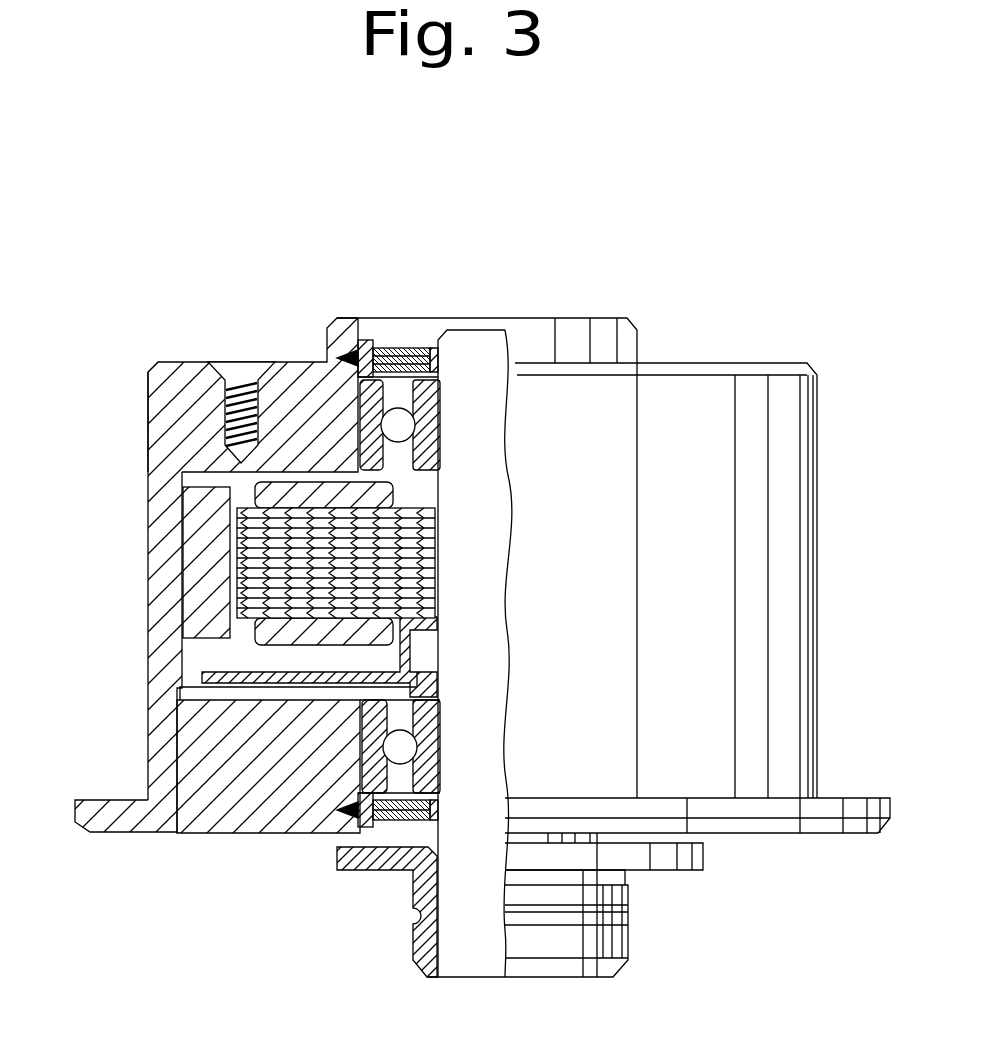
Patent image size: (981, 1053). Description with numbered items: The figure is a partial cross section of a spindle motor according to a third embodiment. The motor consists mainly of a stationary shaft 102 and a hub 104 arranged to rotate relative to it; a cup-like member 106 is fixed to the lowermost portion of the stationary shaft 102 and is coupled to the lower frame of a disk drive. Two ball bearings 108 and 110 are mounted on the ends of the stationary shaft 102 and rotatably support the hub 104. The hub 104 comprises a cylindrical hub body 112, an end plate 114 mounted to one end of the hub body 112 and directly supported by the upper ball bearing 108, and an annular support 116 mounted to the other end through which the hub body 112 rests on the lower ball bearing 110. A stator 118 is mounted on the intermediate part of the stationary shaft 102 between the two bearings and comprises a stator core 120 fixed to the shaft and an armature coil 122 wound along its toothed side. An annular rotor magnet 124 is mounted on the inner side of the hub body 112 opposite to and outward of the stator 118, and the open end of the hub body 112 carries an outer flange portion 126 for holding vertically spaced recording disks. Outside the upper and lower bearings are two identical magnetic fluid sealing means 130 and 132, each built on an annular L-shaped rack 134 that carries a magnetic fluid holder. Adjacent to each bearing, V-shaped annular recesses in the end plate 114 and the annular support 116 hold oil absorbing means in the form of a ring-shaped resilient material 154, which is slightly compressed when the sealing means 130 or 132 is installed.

The stationary shaft 102 is at (467, 338).
The hub 104 is at (822, 552).
The cup-like member 106 is at (583, 940).
The upper ball bearing 108 is at (326, 417).
The lower ball bearing 110 is at (378, 748).
The hub body 112 is at (157, 645).
The end plate 114 is at (150, 418).
The annular support 116 is at (207, 813).
The stator 118 is at (268, 650).
The stator core 120 is at (243, 548).
The armature coil 122 is at (263, 492).
The annular rotor magnet 124 is at (185, 570).
The flange portion 126 is at (107, 825).
The magnetic fluid sealing means 130 is at (400, 338).
The magnetic fluid sealing means 132 is at (403, 834).
The annular L-shaped rack 134 is at (366, 340).
The ring-shaped resilient material 154 is at (340, 357).